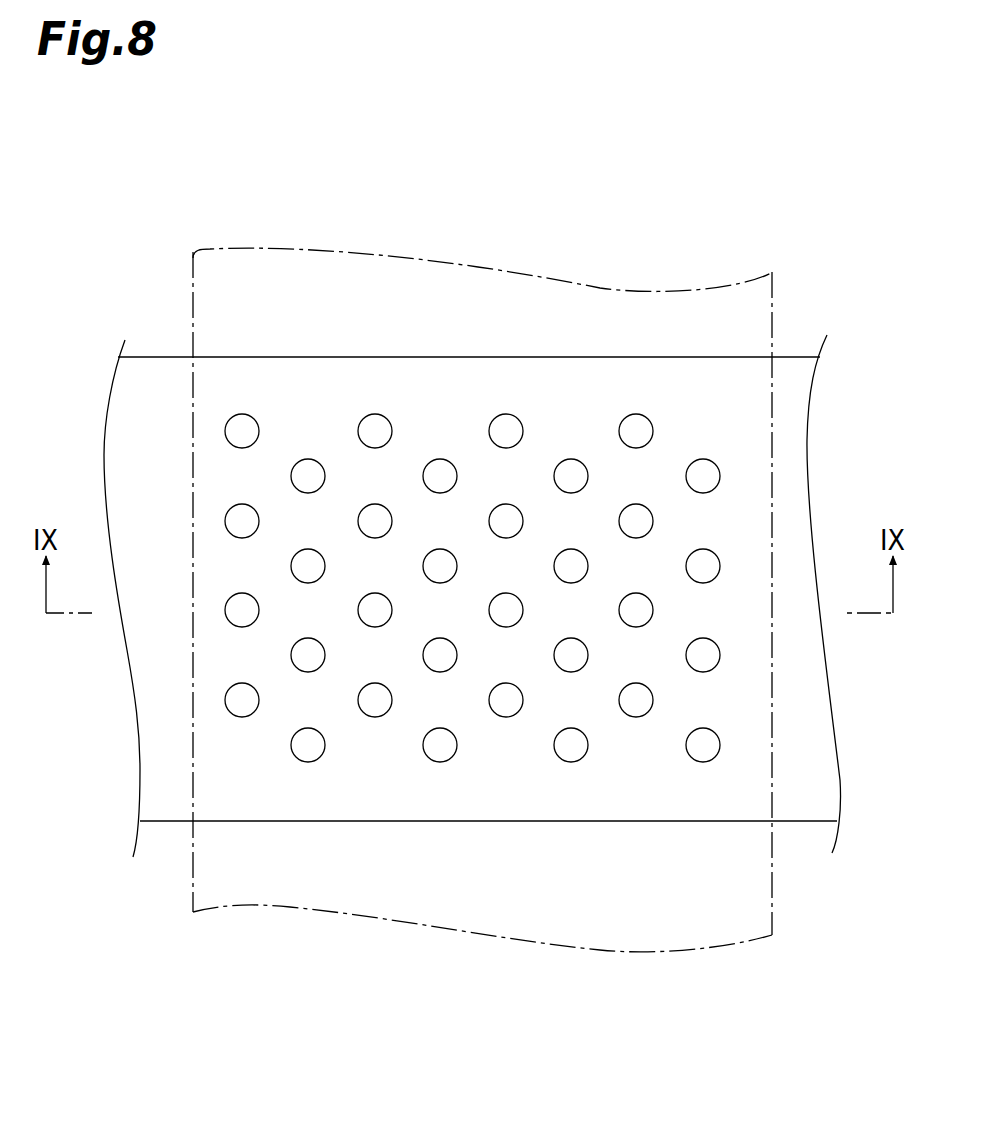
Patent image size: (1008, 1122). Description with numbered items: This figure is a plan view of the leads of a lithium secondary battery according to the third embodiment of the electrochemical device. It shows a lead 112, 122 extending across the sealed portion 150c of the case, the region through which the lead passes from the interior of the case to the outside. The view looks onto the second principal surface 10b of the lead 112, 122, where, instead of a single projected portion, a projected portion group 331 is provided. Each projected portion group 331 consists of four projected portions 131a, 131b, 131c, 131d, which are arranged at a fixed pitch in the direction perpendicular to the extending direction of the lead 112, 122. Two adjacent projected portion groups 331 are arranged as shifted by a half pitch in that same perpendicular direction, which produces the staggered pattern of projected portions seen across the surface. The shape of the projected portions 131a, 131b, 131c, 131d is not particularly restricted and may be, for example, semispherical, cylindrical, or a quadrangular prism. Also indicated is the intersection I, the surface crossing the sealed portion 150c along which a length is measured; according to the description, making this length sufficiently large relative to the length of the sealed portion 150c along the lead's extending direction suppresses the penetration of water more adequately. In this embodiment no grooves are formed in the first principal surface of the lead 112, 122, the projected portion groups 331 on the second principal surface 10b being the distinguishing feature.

The lead 112 is at (873, 155).
The lead 122 is at (533, 528).
The projected portion group 331 is at (367, 187).
The projected portion 131a is at (259, 431).
The projected portion 131b is at (225, 521).
The projected portion 131c is at (225, 610).
The projected portion 131d is at (223, 700).
The second principal surface 10b is at (173, 807).
The sealed portion 150c is at (680, 953).
The intersection I is at (698, 796).